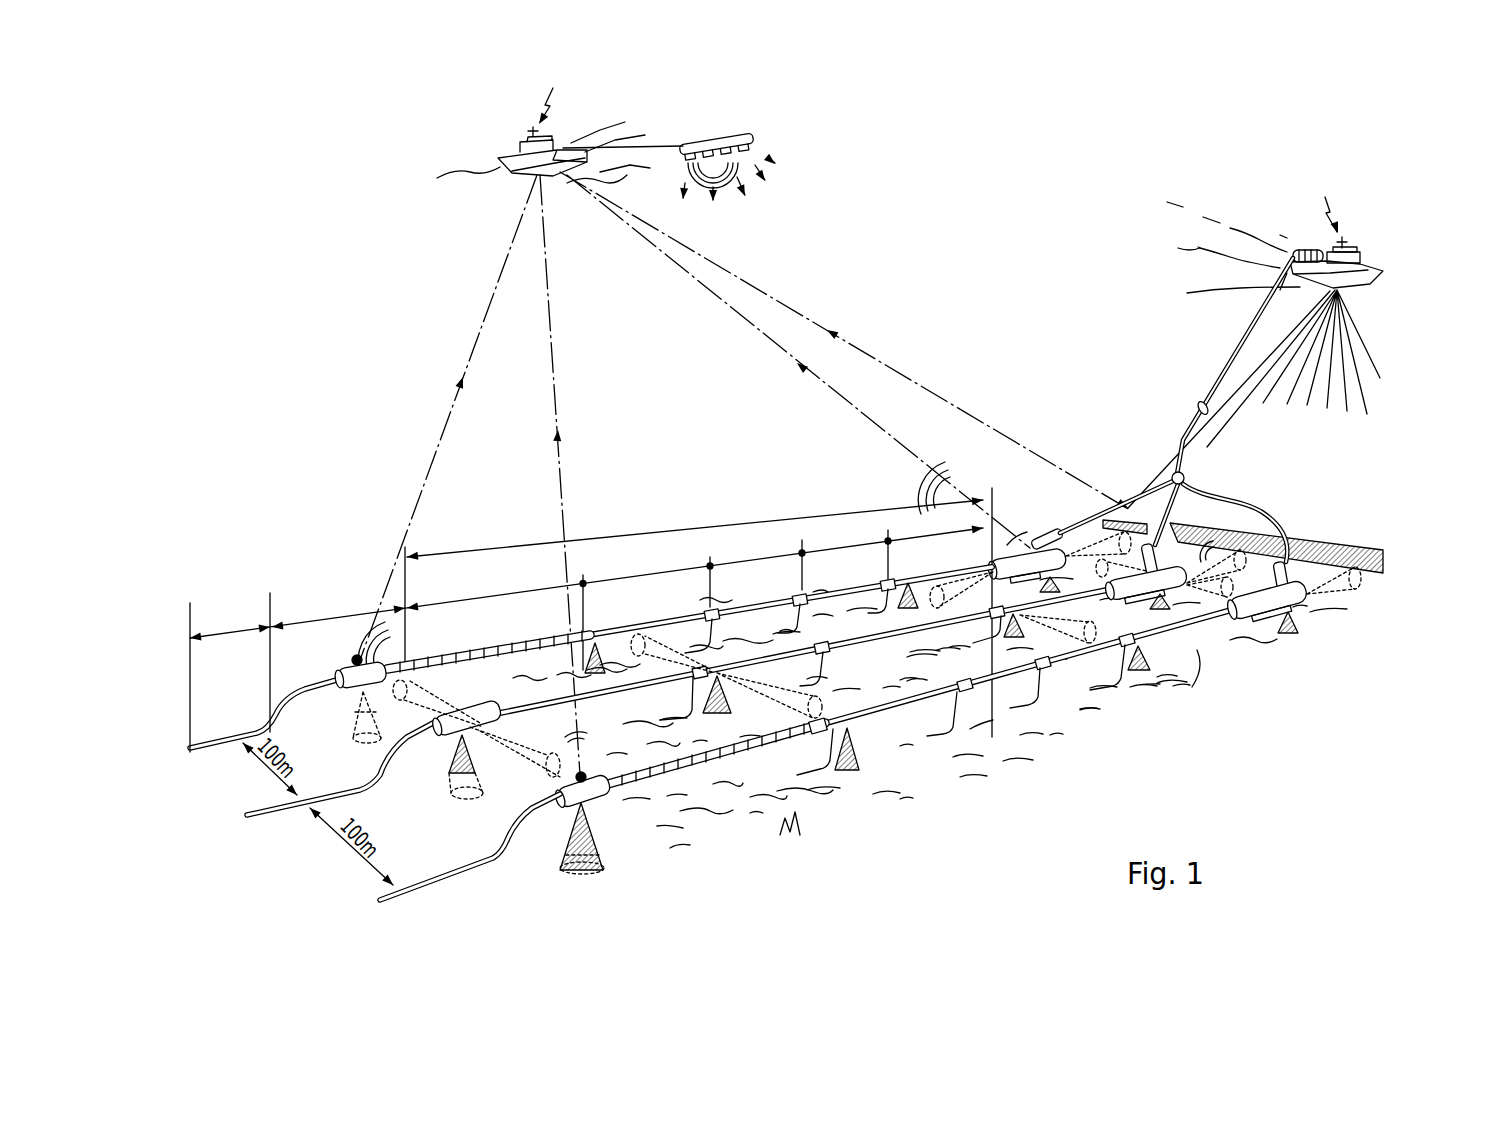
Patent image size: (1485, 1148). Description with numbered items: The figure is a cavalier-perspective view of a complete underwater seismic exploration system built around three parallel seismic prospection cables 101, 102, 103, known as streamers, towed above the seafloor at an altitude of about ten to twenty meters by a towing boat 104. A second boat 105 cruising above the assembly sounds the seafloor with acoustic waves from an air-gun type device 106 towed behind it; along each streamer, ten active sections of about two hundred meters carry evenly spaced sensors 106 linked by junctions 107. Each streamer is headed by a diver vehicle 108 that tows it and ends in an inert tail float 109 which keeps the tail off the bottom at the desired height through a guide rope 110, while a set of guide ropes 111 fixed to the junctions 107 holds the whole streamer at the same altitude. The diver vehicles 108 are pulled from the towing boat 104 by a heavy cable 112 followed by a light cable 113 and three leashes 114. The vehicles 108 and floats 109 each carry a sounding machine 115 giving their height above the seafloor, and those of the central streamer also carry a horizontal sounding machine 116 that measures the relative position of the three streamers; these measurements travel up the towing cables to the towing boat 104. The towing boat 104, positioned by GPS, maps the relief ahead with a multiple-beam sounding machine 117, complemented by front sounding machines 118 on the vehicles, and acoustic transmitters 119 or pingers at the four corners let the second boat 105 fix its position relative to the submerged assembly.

The seismic prospection cable 101 is at (608, 605).
The seismic prospection cable 102 is at (877, 662).
The seismic prospection cable 103 is at (1076, 672).
The towing boat 104 is at (1380, 277).
The second boat 105 is at (520, 180).
The device 106 is at (728, 134).
The junction 107 is at (720, 608).
The diver vehicle 108 is at (1248, 617).
The inert tail float 109 is at (595, 795).
The guide rope 110 is at (520, 840).
The guide rope 111 is at (943, 736).
The heavy cable 112 is at (1213, 380).
The light cable 113 is at (1172, 448).
The leash 114 is at (1262, 512).
The sounding machine 115 is at (1290, 613).
The horizontal sounding machine 116 is at (1217, 587).
The multiple-beam sounding machine 117 is at (1363, 380).
The front sounding machine 118 is at (1340, 585).
The acoustic transmitter 119 is at (352, 665).